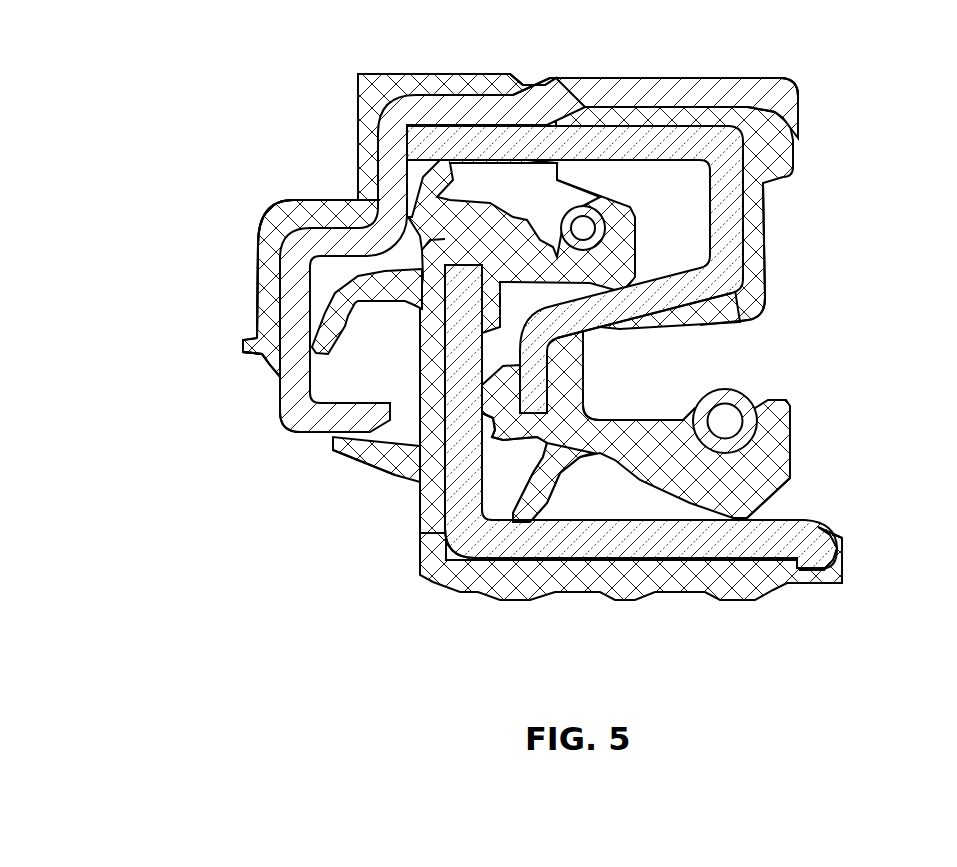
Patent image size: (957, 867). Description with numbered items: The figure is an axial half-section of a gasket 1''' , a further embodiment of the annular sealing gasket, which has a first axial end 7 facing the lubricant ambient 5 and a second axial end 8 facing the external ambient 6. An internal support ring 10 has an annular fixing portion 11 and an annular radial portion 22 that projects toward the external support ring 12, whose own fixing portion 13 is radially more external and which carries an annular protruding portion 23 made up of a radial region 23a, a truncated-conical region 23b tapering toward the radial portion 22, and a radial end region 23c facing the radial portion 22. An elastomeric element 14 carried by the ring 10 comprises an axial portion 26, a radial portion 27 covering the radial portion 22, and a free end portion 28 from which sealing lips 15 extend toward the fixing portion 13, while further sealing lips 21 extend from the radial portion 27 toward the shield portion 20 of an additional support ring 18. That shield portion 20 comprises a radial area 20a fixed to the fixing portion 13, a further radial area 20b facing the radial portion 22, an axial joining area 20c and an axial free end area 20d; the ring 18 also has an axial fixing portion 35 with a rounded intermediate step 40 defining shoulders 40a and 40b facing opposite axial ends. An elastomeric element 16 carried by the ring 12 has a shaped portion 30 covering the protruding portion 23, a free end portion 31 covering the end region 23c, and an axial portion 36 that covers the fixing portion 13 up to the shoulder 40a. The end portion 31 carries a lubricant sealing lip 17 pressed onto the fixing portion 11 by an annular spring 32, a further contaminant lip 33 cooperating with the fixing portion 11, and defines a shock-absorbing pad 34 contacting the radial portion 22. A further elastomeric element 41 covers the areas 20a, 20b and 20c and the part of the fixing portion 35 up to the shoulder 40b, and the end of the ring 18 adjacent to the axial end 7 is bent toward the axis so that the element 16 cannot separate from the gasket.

The gasket 1''' is at (635, 103).
The ambient 5 is at (815, 372).
The ambient 6 is at (192, 300).
The first axial end 7 is at (846, 552).
The second axial end 8 is at (232, 348).
The internal support ring 10 is at (733, 546).
The annular fixing portion 11 is at (680, 540).
The external support ring 12 is at (684, 144).
The annular fixing portion 13 is at (557, 116).
The annular elastomeric element 14 is at (473, 572).
The annular sealing lips 15 is at (590, 165).
The annular elastomeric element 16 is at (762, 128).
The annular sealing lip 17 is at (745, 525).
The additional support ring 18 is at (276, 262).
The annular shield portion 20 is at (292, 338).
The annular radial area 20a is at (393, 143).
The annular radial area 20b is at (293, 300).
The annular axial joining area 20c is at (320, 222).
The annular axial free end area 20d is at (320, 425).
The annular sealing lips 21 is at (310, 325).
The annular radial portion 22 is at (427, 370).
The annular protruding portion 23 is at (736, 212).
The annular radial region 23a is at (745, 228).
The truncated-conical region 23b is at (655, 300).
The annular radial end region 23c is at (543, 377).
The annular axial portion 26 is at (578, 590).
The annular radial portion 27 is at (423, 347).
The annular free end portion 28 is at (552, 245).
The annular shaped portion 30 is at (757, 287).
The annular free end portion 31 is at (628, 433).
The annular spring 32 is at (735, 390).
The annular sealing lip 33 is at (537, 508).
The axial shock-absorbing pad 34 is at (495, 432).
The annular axial fixing portion 35 is at (450, 80).
The annular axial portion 36 is at (670, 80).
The rounded intermediate step 40 is at (540, 83).
The annular shoulder 40a is at (543, 99).
The annular shoulder 40b is at (522, 91).
The annular elastomeric element 41 is at (281, 224).